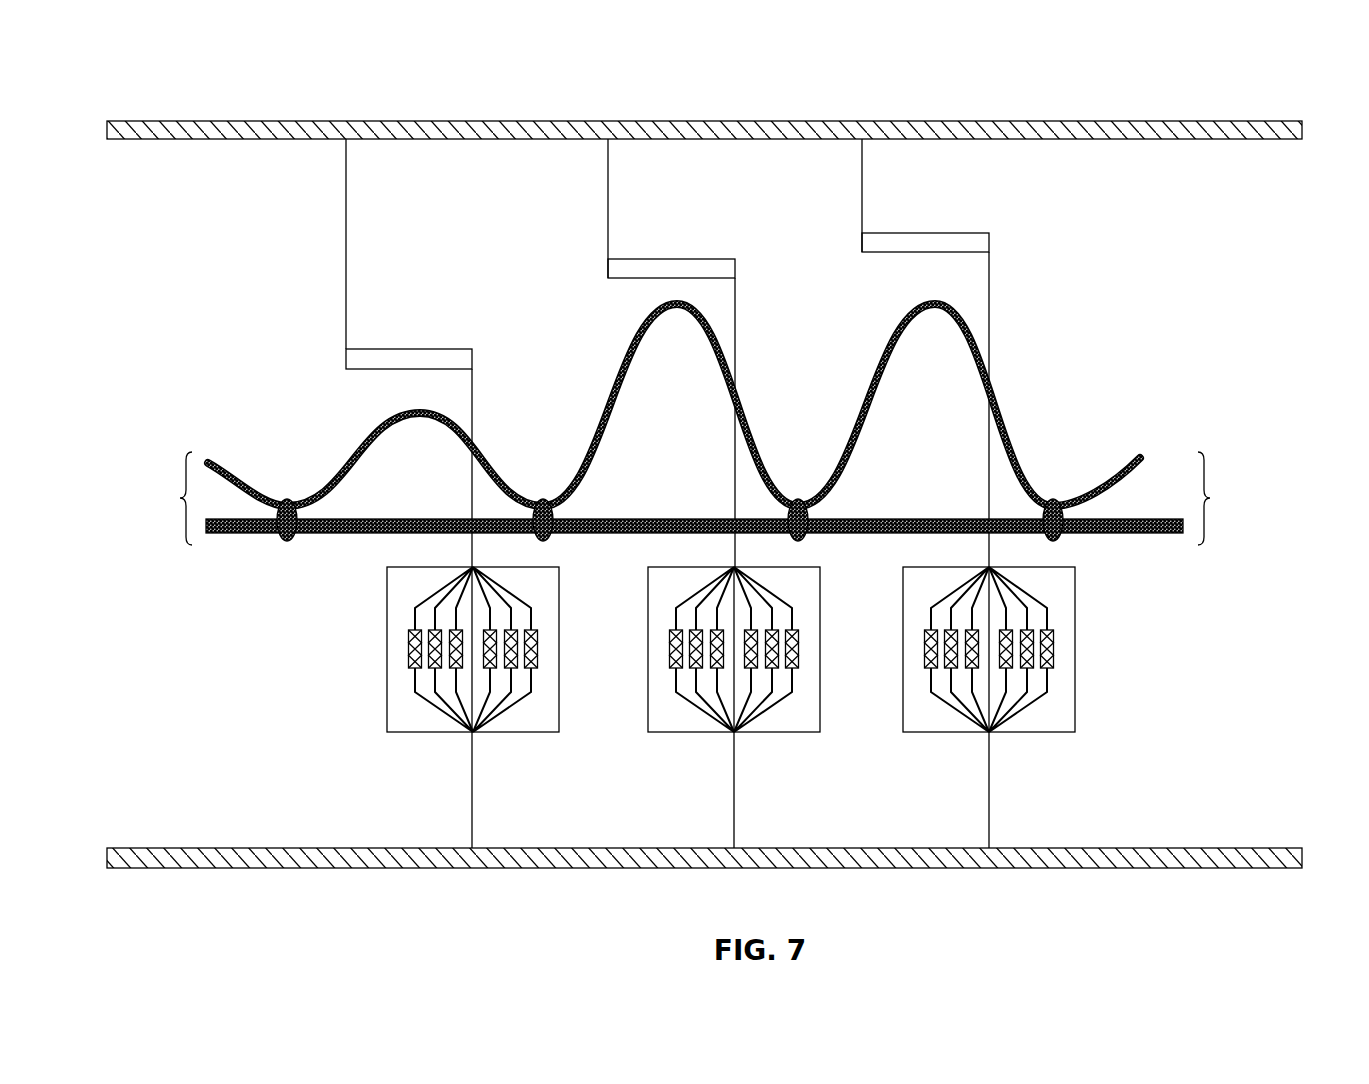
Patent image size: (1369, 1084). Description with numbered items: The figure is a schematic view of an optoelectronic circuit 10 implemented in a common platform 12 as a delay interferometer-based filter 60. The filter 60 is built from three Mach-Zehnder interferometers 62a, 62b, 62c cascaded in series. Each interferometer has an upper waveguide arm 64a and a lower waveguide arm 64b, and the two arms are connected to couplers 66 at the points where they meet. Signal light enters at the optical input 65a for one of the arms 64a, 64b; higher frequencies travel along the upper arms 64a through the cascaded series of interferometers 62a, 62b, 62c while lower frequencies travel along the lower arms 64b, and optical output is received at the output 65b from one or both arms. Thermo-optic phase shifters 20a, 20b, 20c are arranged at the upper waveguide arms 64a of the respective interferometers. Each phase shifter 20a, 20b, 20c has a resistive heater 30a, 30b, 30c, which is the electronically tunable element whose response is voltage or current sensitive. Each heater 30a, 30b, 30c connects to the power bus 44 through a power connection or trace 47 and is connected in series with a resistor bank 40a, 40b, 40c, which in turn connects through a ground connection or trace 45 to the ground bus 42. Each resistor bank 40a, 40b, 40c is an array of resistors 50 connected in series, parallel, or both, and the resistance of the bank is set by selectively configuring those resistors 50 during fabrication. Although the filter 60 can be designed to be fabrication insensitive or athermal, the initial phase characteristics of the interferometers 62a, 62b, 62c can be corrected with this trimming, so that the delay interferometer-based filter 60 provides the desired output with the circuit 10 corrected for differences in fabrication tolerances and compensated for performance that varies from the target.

The optoelectronic circuit 10 is at (165, 66).
The common platform 12 is at (782, 92).
The thermo-optic phase shifter 20a is at (390, 486).
The thermo-optic phase shifter 20b is at (661, 436).
The thermo-optic phase shifter 20c is at (913, 426).
The resistive heater 30a is at (398, 348).
The resistive heater 30b is at (672, 258).
The resistive heater 30c is at (925, 232).
The resistor bank 40a is at (387, 706).
The resistor bank 40b is at (787, 733).
The resistor bank 40c is at (1040, 733).
The ground bus 42 is at (1053, 869).
The power bus 44 is at (1108, 120).
The ground connection or trace 45 is at (472, 776).
The power connection or trace 47 is at (474, 400).
The resistor 50 is at (408, 656).
The delay interferometer-based filter 60 is at (207, 412).
The Mach-Zehnder interferometer 62a is at (308, 373).
The Mach-Zehnder interferometer 62b is at (607, 318).
The Mach-Zehnder interferometer 62c is at (1010, 335).
The upper waveguide arm 64a is at (358, 452).
The lower waveguide arm 64b is at (358, 535).
The optical input 65a is at (159, 498).
The output 65b is at (1232, 498).
The coupler 66 is at (287, 543).